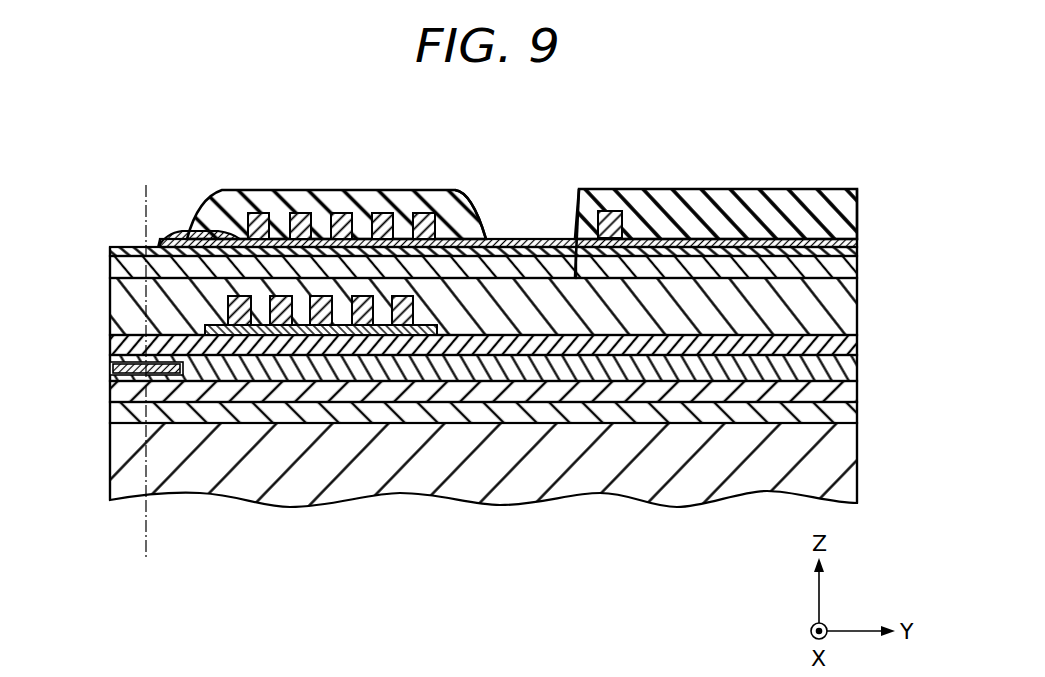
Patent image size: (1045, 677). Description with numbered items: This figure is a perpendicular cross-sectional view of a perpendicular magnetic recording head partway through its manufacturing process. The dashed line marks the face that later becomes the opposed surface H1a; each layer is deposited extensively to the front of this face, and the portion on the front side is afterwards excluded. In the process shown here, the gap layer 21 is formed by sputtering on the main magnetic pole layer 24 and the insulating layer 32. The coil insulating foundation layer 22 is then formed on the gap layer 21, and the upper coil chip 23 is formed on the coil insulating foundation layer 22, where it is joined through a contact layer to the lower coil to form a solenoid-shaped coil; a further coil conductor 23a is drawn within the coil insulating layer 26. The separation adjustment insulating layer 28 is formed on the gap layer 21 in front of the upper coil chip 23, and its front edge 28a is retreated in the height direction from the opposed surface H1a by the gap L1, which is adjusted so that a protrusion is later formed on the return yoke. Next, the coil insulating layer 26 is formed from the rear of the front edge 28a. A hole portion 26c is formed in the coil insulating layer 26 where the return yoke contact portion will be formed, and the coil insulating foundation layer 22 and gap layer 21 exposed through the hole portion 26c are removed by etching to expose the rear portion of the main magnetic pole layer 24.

The gap layer 21 is at (523, 239).
The coil insulating foundation layer 22 is at (468, 235).
The upper coil chip 23 is at (338, 212).
The coil lead conductor 23a is at (614, 211).
The main magnetic pole layer 24 is at (116, 266).
The coil insulating layer 26 is at (236, 190).
The hole portion 26c is at (556, 203).
The separation adjustment insulating layer 28 is at (180, 229).
The front edge 28a is at (145, 279).
The insulating layer 32 is at (858, 262).
The gap L1 is at (173, 212).
The opposed surface H1a is at (143, 520).